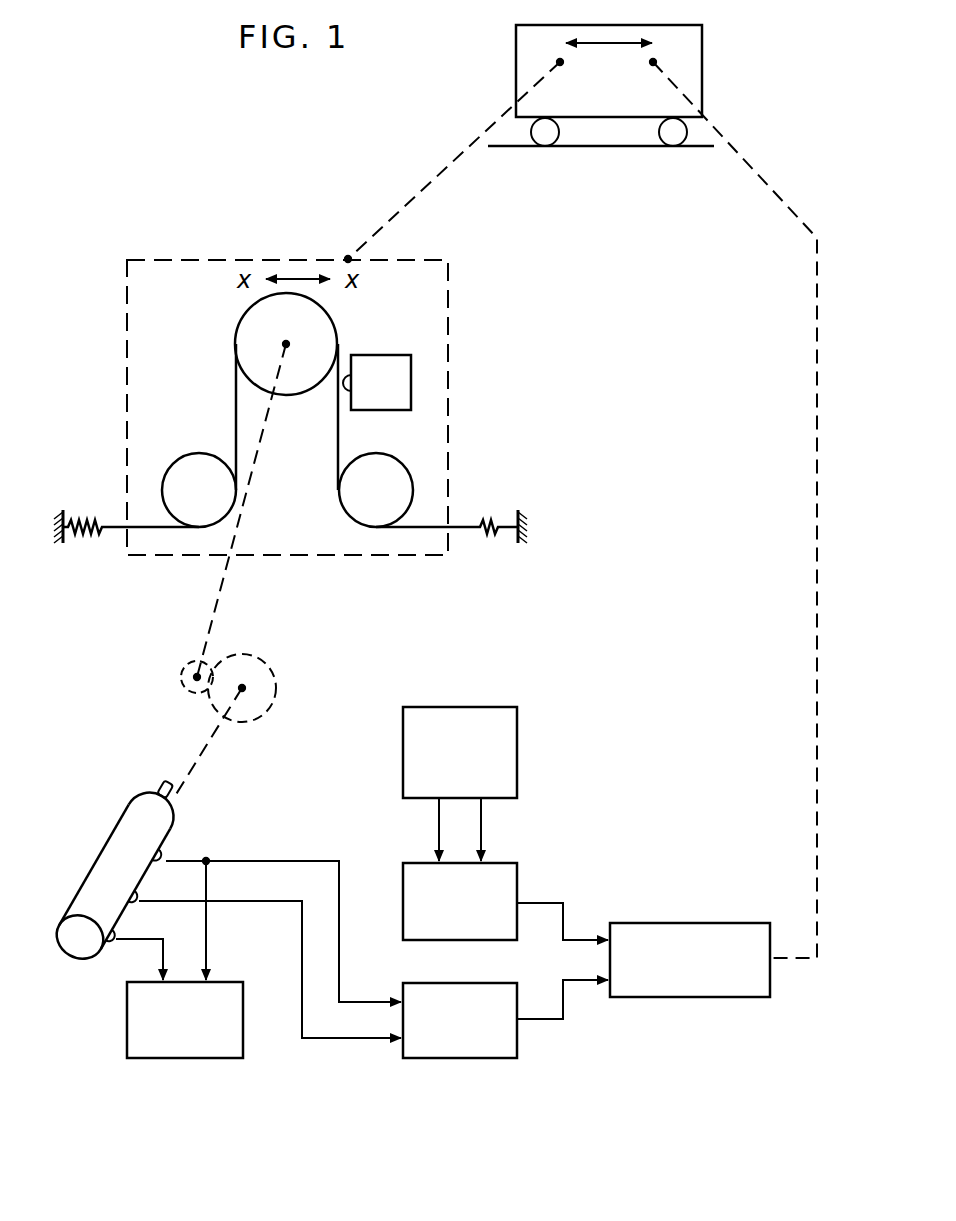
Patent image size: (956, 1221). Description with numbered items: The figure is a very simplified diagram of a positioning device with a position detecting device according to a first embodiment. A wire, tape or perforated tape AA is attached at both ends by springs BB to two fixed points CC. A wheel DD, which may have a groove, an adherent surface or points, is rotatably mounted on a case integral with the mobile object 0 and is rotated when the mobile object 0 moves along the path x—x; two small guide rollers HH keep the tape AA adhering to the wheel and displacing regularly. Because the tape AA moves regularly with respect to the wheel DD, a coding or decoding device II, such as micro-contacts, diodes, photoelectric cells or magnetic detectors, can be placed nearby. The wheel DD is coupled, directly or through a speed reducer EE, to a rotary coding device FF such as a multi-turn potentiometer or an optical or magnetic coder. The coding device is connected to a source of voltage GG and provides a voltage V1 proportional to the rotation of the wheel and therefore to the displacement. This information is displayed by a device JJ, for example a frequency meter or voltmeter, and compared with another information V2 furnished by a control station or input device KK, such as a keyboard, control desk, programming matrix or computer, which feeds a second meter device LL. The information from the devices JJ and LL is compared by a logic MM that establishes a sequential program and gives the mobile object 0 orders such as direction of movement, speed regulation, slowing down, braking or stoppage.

The mobile object 0 is at (704, 90).
The wire, tape or perforated tape AA is at (458, 525).
The springs BB is at (88, 533).
The fixed points CC is at (70, 511).
The wheel DD is at (238, 312).
The speed reducer EE is at (258, 657).
The rotary coding device FF is at (100, 858).
The source of voltage GG is at (246, 998).
The guide rollers HH is at (217, 455).
The coding or decoding device II is at (390, 355).
The display device JJ is at (407, 982).
The control station or input device KK is at (471, 704).
The device LL is at (408, 860).
The logic MM is at (681, 921).
The voltage V1 is at (267, 900).
The information V2 is at (440, 822).